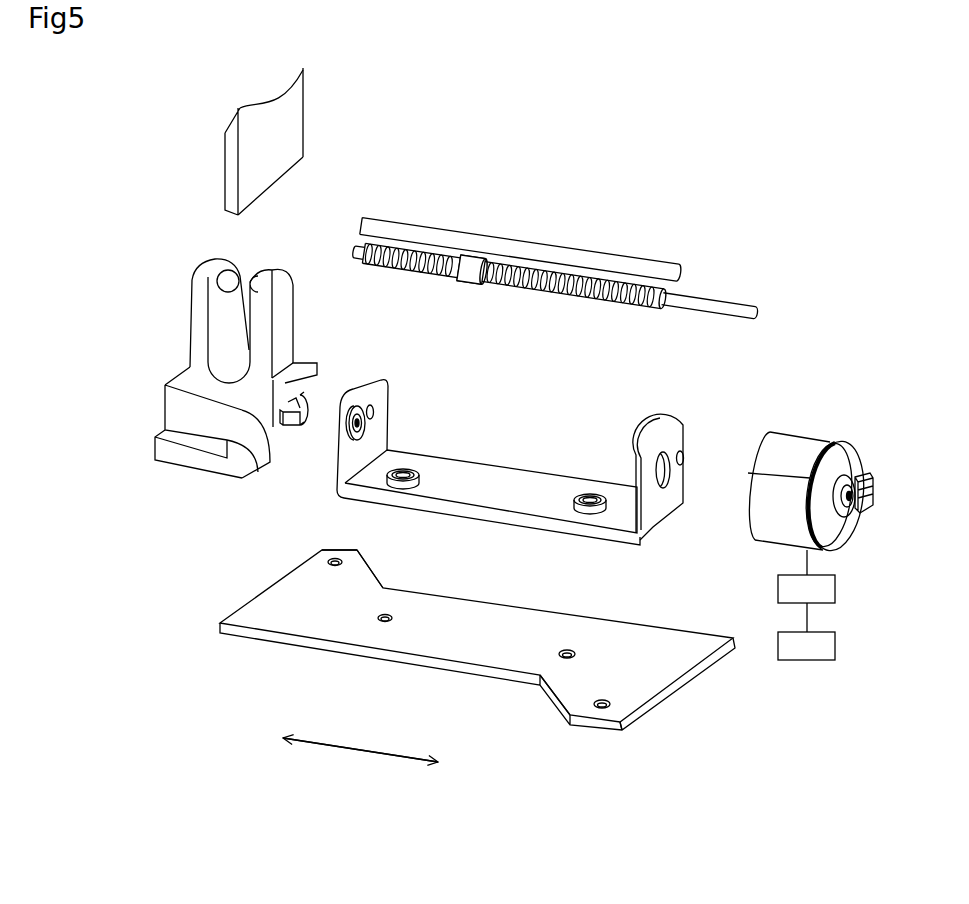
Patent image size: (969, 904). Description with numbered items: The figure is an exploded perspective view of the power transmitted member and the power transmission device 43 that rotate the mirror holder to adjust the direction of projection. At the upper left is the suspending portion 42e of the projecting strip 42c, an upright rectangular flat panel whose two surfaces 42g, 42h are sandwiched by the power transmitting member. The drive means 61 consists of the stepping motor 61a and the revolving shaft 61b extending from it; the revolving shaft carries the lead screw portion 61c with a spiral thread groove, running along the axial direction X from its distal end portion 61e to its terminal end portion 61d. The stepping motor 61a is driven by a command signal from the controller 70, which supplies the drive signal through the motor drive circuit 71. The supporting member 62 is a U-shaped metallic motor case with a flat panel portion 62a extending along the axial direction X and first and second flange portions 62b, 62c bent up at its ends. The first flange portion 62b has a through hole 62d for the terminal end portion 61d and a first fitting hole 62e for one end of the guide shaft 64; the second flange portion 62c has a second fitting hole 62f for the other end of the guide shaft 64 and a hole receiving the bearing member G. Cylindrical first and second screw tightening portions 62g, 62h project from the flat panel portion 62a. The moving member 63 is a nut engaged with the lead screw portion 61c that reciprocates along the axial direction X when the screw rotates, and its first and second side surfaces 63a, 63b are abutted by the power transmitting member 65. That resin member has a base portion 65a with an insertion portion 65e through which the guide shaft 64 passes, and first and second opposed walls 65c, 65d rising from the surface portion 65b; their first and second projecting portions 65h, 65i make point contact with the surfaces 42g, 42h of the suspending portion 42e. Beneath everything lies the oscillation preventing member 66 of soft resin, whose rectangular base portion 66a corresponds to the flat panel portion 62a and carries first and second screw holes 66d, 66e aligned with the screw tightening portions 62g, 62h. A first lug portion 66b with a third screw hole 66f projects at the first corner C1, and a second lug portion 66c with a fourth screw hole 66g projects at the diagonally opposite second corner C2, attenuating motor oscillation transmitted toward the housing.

The suspending portion 42e is at (272, 141).
The projecting strip 42c is at (272, 141).
The surface of suspending portion 42g is at (297, 142).
The surface of suspending portion 42h is at (223, 152).
The power transmission device 43 is at (673, 195).
The drive means 61 is at (597, 357).
The stepping motor 61a is at (783, 448).
The revolving shaft 61b is at (720, 308).
The lead screw portion 61c is at (567, 292).
The terminal end portion 61d is at (652, 300).
The distal end portion 61e is at (357, 257).
The supporting member 62 is at (520, 486).
The flat panel portion 62a is at (503, 480).
The first flange portion 62b is at (682, 490).
The second flange portion 62c is at (372, 417).
The through hole 62d is at (667, 473).
The first fitting hole 62e is at (682, 457).
The second fitting hole 62f is at (373, 410).
The first screw tightening portion 62g is at (592, 497).
The second screw tightening portion 62h is at (405, 470).
The moving member 63 is at (468, 266).
The first side surface 63a is at (480, 282).
The second side surface 63b is at (458, 265).
The guide shaft 64 is at (547, 252).
The power transmitting member 65 is at (228, 363).
The base portion 65a is at (253, 460).
The surface portion 65b is at (323, 345).
The first opposed wall 65c is at (277, 277).
The second opposed wall 65d is at (200, 322).
The insertion portion 65e is at (310, 407).
The first projecting portion 65h is at (257, 277).
The second projecting portion 65i is at (220, 273).
The oscillation preventing member 66 is at (477, 647).
The base portion 66a is at (433, 642).
The first lug portion 66b is at (568, 695).
The second lug portion 66c is at (357, 570).
The first screw hole 66d is at (572, 650).
The second screw hole 66e is at (390, 615).
The third screw hole 66f is at (602, 708).
The fourth screw hole 66g is at (323, 562).
The controller 70 is at (806, 631).
The motor drive circuit 71 is at (806, 576).
The bearing member G is at (347, 430).
The first corner C1 is at (623, 737).
The second corner C2 is at (327, 547).
The axial direction X is at (355, 750).